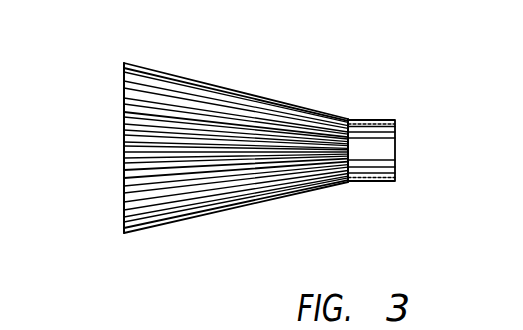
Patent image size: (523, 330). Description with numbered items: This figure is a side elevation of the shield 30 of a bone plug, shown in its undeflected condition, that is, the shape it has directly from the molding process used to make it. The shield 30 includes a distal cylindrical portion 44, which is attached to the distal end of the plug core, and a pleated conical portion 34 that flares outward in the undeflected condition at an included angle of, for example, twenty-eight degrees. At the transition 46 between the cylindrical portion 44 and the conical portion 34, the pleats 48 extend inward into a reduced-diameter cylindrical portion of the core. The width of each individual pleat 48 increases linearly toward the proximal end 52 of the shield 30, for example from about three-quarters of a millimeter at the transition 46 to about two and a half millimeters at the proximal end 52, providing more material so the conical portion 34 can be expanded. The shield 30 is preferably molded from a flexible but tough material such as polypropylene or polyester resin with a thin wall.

The shield 30 is at (324, 192).
The pleated conical portion 34 is at (227, 86).
The distal cylindrical portion 44 is at (377, 120).
The transition 46 is at (349, 120).
The pleats 48 is at (212, 185).
The proximal end 52 is at (123, 175).